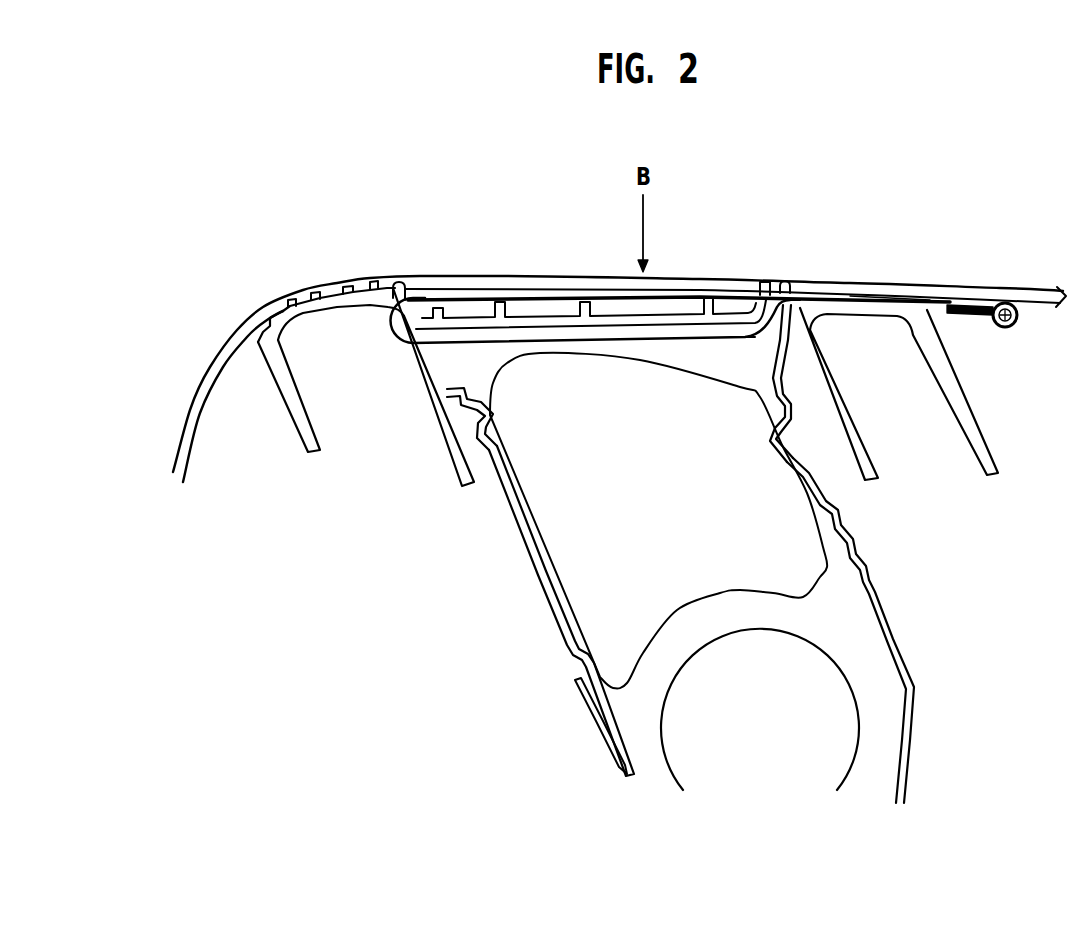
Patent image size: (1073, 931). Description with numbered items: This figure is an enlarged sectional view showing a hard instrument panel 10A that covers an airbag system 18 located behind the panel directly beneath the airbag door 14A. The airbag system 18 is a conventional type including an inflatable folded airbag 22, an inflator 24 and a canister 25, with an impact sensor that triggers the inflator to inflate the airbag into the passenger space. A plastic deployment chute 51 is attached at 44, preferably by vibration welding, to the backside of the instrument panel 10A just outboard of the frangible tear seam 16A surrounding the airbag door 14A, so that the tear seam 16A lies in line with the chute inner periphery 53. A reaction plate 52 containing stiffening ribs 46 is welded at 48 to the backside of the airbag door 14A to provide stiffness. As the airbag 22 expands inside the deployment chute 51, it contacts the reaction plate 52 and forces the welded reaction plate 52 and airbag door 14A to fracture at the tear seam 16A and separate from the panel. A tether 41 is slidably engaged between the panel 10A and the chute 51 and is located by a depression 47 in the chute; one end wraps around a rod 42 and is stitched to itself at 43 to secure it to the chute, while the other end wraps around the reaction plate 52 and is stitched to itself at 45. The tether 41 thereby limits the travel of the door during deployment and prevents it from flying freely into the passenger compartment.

The hard instrument panel 10A is at (173, 423).
The airbag door 14A is at (477, 283).
The frangible tear seam 16A is at (368, 275).
The airbag system 18 is at (930, 770).
The inflatable folded airbag 22 is at (812, 563).
The inflator 24 is at (837, 790).
The canister 25 is at (913, 708).
The tether 41 is at (650, 343).
The rod 42 is at (1007, 327).
The tether attachment point 43 is at (964, 303).
The chute attachment point 44 is at (287, 303).
The tether attachment point 45 is at (803, 282).
The stiffening ribs 46 is at (709, 300).
The depression 47 is at (891, 293).
The reaction plate weld point 48 is at (397, 281).
The deployment chute 51 is at (427, 413).
The reaction plate 52 is at (748, 340).
The chute inner periphery 53 is at (417, 344).